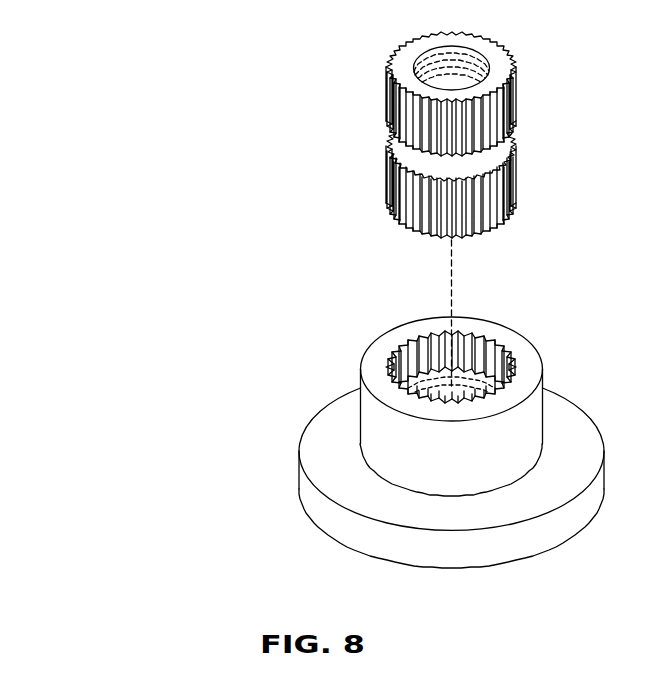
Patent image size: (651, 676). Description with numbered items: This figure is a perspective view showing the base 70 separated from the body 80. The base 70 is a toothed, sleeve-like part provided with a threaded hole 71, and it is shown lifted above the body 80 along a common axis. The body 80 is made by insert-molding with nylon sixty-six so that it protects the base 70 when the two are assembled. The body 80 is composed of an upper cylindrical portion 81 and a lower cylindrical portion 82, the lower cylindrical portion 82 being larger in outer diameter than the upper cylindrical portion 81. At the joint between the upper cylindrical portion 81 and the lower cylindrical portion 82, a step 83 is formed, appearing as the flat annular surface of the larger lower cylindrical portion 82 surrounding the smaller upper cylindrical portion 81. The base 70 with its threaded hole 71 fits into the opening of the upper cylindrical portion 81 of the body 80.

The base 70 is at (341, 123).
The threaded hole 71 is at (432, 62).
The body 80 is at (310, 442).
The upper cylindrical portion 81 is at (377, 422).
The lower cylindrical portion 82 is at (350, 530).
The step 83 is at (342, 471).